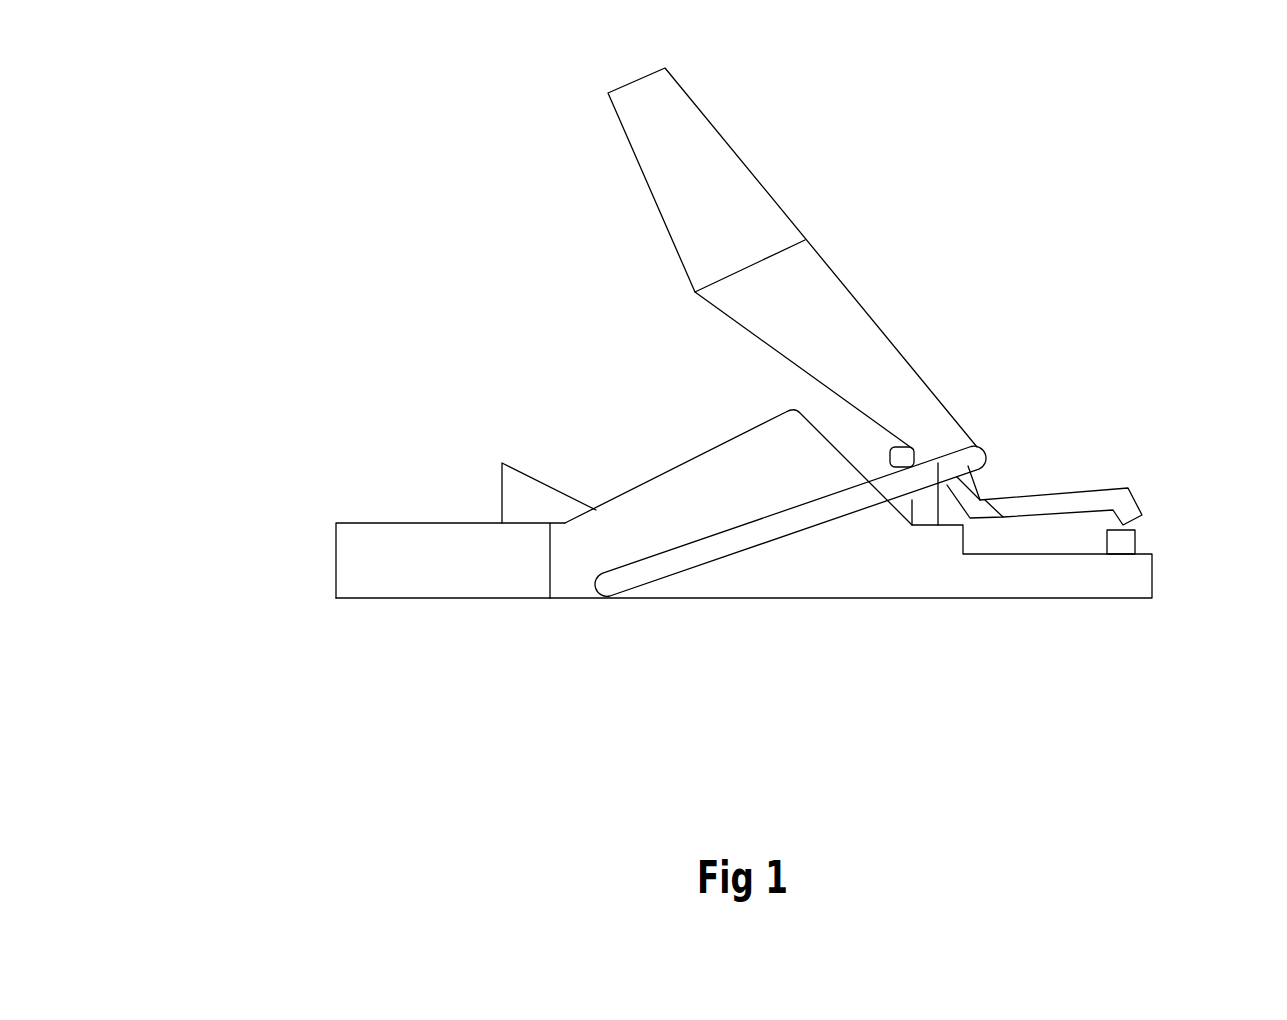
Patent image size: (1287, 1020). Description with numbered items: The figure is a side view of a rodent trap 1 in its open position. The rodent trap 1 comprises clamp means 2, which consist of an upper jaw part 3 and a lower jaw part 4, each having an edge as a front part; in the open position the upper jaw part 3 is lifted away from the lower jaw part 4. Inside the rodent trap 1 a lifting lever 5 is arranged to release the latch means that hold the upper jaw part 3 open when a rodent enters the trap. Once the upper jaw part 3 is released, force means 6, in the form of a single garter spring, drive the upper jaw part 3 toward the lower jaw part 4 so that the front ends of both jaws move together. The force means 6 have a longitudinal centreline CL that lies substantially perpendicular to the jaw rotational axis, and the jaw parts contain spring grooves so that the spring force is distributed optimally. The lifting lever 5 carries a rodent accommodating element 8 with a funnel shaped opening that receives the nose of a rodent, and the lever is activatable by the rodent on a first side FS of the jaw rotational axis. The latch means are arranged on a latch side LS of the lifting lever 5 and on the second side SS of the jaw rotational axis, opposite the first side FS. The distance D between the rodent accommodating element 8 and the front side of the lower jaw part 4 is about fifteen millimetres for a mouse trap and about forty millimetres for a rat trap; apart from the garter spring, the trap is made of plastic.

The rodent trap 1 is at (926, 238).
The clamp means 2 is at (396, 244).
The upper jaw part 3 is at (637, 72).
The lower jaw part 4 is at (323, 552).
The lifting lever 5 is at (498, 473).
The force means 6 is at (755, 547).
The rodent accommodating element 8 is at (538, 473).
The second side SS is at (1043, 465).
The latch side LS is at (1115, 620).
The first side FS is at (385, 475).
The longitudinal centreline CL is at (1245, 365).
The distance D is at (490, 505).